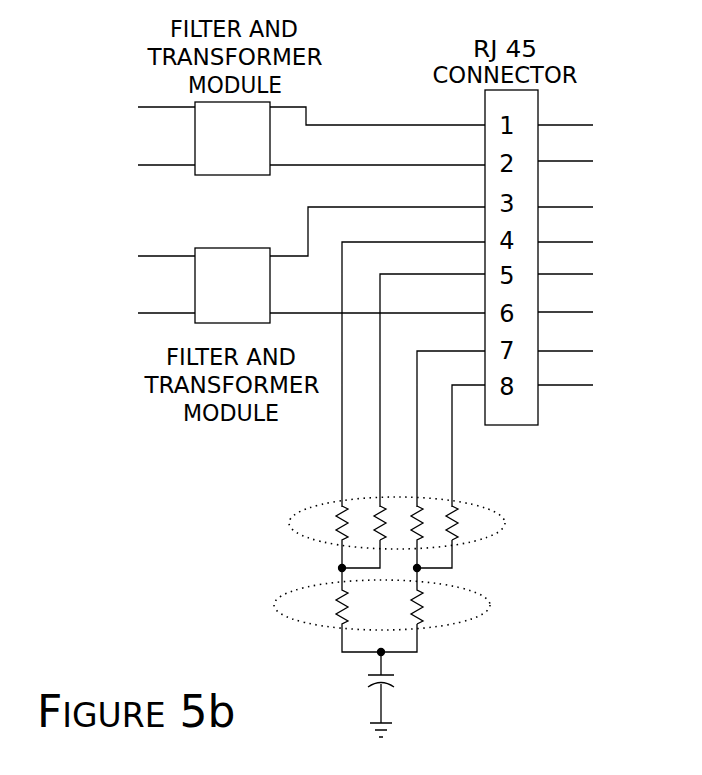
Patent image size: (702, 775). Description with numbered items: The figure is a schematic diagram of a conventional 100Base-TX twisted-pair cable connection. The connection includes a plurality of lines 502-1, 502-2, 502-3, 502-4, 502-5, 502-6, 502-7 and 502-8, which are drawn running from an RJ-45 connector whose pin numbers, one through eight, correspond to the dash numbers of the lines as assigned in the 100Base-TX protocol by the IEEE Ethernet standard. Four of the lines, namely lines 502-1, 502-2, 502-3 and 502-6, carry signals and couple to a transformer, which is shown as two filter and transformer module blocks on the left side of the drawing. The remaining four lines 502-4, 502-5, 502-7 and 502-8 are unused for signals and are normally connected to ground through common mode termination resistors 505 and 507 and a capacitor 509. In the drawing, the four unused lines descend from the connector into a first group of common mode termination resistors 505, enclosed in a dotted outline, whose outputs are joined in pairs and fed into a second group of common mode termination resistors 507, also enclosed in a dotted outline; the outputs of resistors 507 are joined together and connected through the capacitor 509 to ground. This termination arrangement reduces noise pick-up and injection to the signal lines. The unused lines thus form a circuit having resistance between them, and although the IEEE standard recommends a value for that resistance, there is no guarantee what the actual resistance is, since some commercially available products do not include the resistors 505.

The line 502-1 is at (553, 124).
The line 502-2 is at (553, 160).
The line 502-3 is at (553, 206).
The line 502-4 is at (553, 241).
The line 502-5 is at (553, 273).
The line 502-6 is at (553, 311).
The line 502-7 is at (553, 350).
The line 502-8 is at (553, 384).
The common mode termination resistors 505 is at (467, 504).
The common mode termination resistors 507 is at (458, 587).
The capacitor 509 is at (430, 702).